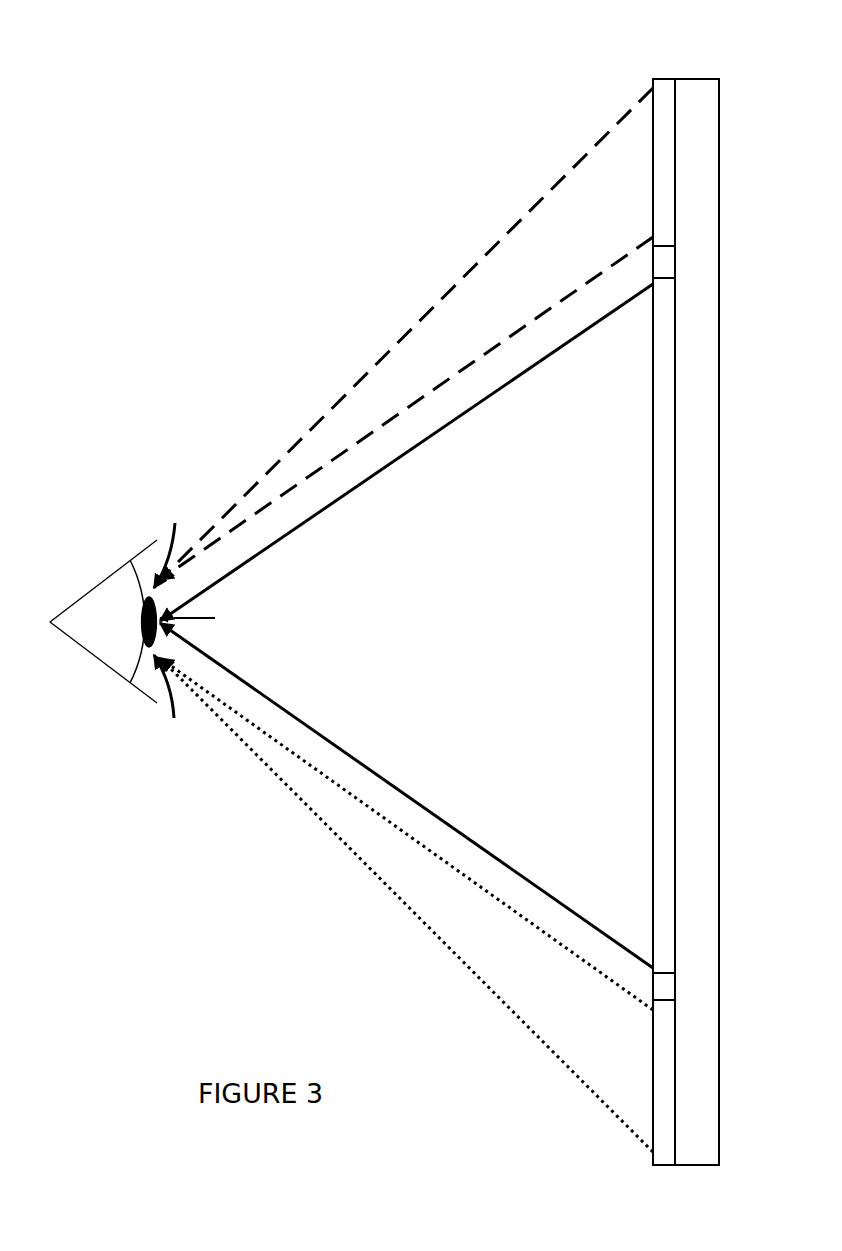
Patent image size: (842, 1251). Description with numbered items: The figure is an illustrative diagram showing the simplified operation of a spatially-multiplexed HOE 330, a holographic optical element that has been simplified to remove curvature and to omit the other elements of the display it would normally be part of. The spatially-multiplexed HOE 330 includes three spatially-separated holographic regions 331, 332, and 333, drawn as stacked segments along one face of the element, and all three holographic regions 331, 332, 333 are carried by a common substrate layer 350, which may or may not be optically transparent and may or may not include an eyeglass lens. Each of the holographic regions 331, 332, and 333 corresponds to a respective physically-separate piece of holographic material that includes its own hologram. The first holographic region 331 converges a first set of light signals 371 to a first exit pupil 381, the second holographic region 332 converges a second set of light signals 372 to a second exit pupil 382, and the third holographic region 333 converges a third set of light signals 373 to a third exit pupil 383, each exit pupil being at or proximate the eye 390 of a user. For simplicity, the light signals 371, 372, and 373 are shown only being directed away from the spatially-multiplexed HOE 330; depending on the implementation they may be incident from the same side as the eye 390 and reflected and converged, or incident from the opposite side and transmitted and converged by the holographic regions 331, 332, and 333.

The spatially-multiplexed HOE 330 is at (710, 70).
The first holographic region 331 is at (662, 146).
The second holographic region 332 is at (662, 602).
The third holographic region 333 is at (662, 1033).
The common substrate layer 350 is at (703, 679).
The first set of light signals 371 is at (571, 267).
The second set of light signals 372 is at (572, 641).
The third set of light signals 373 is at (572, 1012).
The first exit pupil 381 is at (181, 536).
The second exit pupil 382 is at (214, 619).
The third exit pupil 383 is at (181, 709).
The eye 390 is at (116, 634).